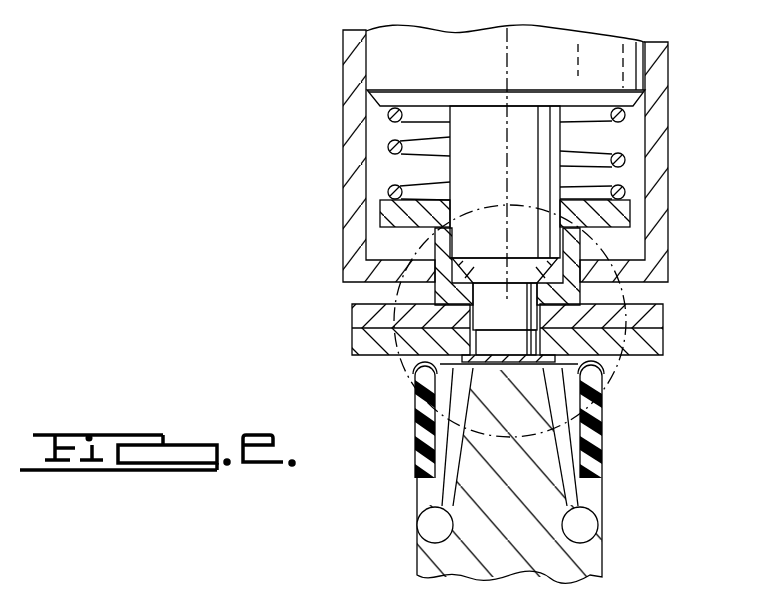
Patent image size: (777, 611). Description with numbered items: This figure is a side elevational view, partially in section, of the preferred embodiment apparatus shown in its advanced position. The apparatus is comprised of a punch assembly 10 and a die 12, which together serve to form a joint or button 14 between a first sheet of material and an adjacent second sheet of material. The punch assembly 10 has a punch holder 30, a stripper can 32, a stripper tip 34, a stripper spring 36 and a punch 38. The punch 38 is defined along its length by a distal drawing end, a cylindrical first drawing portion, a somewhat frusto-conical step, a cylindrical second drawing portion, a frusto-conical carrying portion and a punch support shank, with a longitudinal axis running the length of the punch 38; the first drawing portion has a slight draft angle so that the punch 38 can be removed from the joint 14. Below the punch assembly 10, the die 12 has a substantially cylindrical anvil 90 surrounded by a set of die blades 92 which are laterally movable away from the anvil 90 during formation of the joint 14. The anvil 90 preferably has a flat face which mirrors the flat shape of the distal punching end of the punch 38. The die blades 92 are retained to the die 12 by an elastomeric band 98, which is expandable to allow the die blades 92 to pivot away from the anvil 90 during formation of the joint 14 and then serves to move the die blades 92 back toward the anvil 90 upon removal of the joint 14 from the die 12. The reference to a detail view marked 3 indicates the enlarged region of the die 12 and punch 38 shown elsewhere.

The punch assembly 10 is at (312, 257).
The punch holder 30 is at (380, 57).
The stripper can 32 is at (357, 102).
The stripper spring 36 is at (397, 144).
The punch 38 is at (457, 169).
The stripper tip 34 is at (405, 214).
The mounting plate 3 is at (636, 350).
The die 12 is at (634, 488).
The joint 14 is at (453, 421).
The anvil 90 is at (418, 392).
The die blades 92 is at (440, 364).
The elastomeric band 98 is at (600, 413).